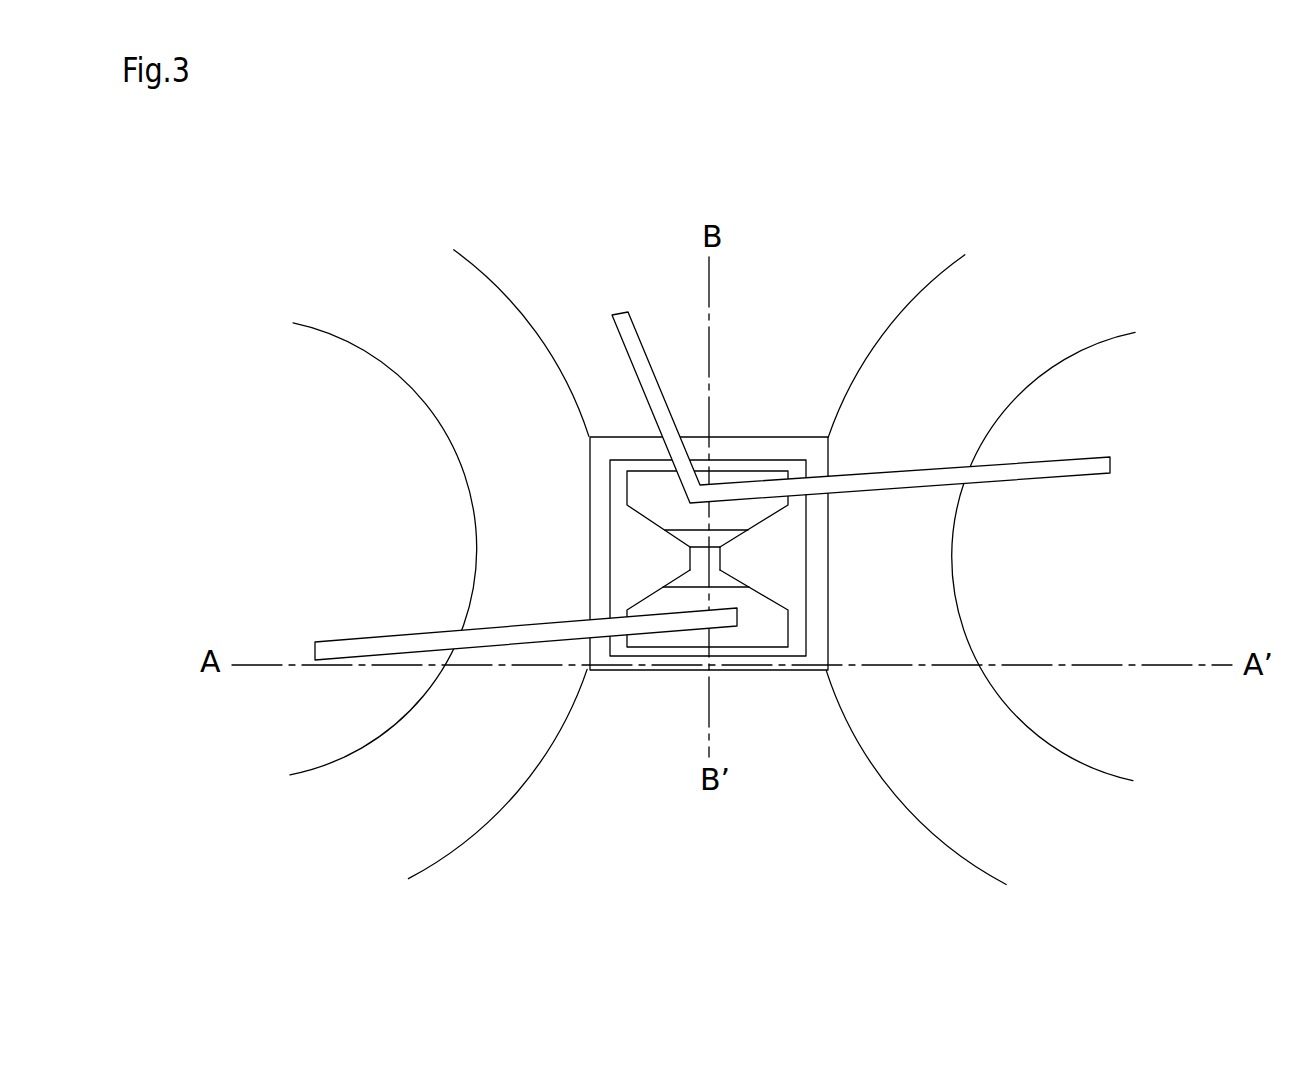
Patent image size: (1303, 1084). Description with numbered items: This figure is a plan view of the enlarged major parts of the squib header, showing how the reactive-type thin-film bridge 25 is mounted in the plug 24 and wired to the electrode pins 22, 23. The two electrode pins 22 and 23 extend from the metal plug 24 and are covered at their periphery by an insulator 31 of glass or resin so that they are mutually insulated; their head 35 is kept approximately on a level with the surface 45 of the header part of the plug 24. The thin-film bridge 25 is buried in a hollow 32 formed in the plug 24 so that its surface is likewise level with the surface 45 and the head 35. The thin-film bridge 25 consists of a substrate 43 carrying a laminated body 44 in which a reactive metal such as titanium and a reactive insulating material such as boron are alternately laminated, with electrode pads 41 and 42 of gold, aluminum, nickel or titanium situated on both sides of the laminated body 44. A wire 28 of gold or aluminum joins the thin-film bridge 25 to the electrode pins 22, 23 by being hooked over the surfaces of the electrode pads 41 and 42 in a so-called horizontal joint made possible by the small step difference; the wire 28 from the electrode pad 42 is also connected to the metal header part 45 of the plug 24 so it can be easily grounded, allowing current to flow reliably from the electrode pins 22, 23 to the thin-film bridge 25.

The electrode pin 22 is at (285, 542).
The electrode pin 23 is at (1112, 547).
The plug 24 is at (586, 900).
The thin-film bridge 25 is at (740, 667).
The wire 28 is at (822, 480).
The insulator 31 is at (377, 293).
The hollow 32 is at (628, 445).
The head 35 is at (712, 552).
The electrode pad 41 is at (718, 655).
The electrode pad 42 is at (752, 518).
The substrate 43 is at (645, 572).
The laminated body 44 is at (717, 573).
The surface of the header part 45 is at (621, 521).